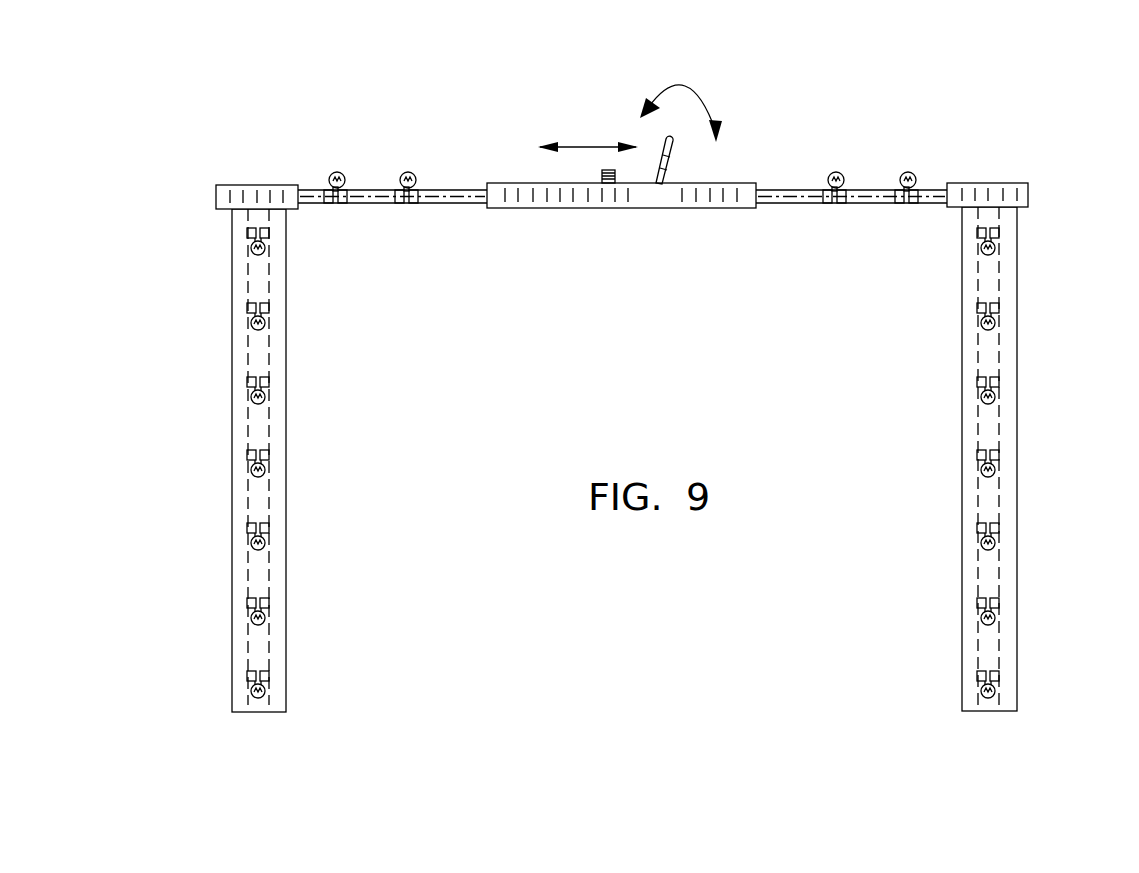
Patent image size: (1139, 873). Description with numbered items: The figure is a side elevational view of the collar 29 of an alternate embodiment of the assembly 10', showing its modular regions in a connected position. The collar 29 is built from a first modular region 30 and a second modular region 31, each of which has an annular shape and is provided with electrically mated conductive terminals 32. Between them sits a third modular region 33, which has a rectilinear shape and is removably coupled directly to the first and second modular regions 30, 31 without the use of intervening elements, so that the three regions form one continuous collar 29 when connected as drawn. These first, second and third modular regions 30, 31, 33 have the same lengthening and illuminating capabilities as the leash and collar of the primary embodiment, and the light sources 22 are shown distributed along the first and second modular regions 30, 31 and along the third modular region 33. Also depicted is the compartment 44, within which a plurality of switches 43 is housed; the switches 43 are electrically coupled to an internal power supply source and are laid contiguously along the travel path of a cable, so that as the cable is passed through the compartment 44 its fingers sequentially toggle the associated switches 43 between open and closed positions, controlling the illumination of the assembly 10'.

The assembly 10' is at (645, 423).
The light bulb 22 is at (408, 173).
The collar 29 is at (452, 203).
The first modular region 30 is at (278, 277).
The second modular region 31 is at (965, 291).
The electrically mated conductive terminals 32 is at (264, 192).
The third modular region 33 is at (452, 190).
The switches 43 is at (603, 173).
The compartment 44 is at (742, 208).